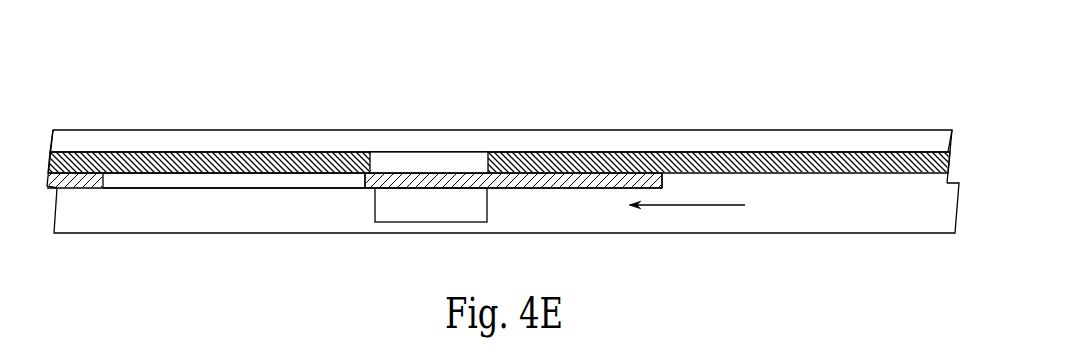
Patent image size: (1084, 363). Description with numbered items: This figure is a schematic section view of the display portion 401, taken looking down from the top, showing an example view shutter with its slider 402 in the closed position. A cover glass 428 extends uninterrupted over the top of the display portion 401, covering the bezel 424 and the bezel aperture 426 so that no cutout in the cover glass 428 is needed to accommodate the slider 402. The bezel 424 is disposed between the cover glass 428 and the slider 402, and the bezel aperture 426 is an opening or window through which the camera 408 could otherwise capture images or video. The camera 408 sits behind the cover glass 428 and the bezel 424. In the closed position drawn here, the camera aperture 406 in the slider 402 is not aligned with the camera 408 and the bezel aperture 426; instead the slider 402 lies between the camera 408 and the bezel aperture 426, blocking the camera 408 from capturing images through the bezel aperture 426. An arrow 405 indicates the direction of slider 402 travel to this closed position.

The display portion 401 is at (503, 149).
The cover glass 428 is at (238, 138).
The bezel 424 is at (763, 160).
The bezel aperture 426 is at (423, 158).
The camera aperture 406 is at (342, 178).
The slider 402 is at (610, 177).
The camera 408 is at (393, 207).
The direction arrow 405 is at (707, 208).